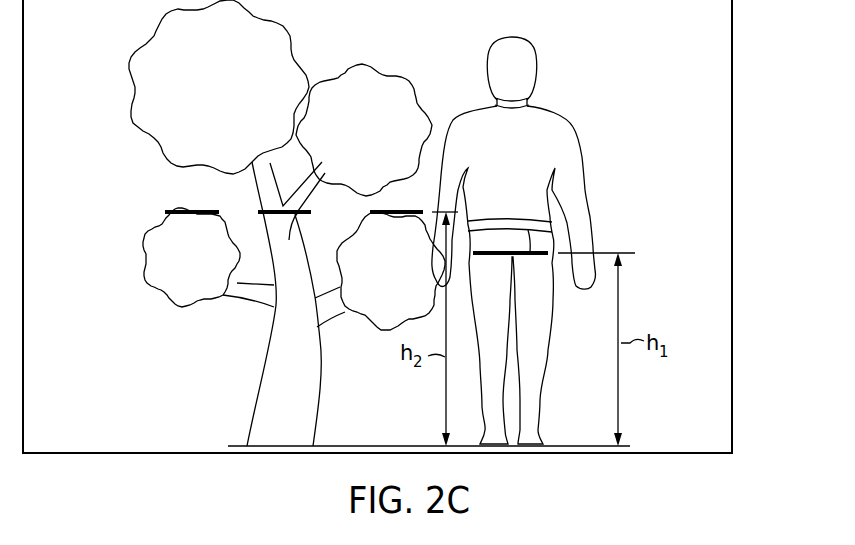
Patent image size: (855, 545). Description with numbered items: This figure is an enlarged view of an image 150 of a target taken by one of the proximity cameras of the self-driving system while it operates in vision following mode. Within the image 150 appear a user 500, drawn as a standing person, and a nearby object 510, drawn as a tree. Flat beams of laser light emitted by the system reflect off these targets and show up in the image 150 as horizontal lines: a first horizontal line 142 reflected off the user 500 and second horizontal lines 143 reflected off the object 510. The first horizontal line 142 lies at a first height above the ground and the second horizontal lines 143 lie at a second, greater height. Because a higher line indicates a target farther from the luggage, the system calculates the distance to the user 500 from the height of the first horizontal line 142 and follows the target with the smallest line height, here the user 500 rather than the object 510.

The image 150 is at (744, 215).
The object 510 is at (148, 72).
The user 500 is at (552, 118).
The second horizontal line 143 is at (197, 212).
The first horizontal line 142 is at (529, 252).